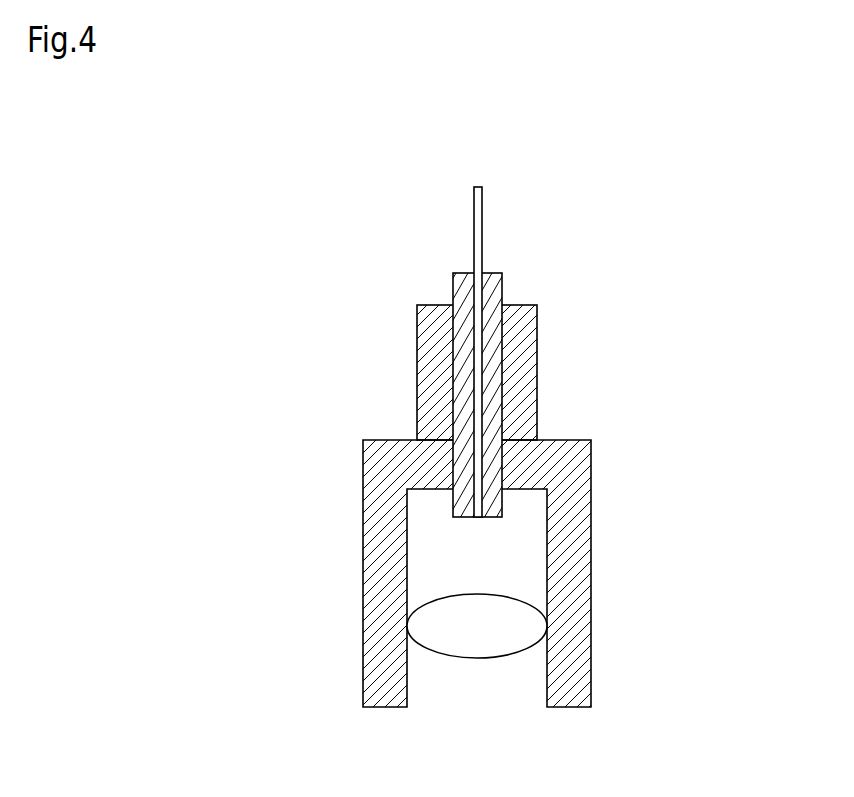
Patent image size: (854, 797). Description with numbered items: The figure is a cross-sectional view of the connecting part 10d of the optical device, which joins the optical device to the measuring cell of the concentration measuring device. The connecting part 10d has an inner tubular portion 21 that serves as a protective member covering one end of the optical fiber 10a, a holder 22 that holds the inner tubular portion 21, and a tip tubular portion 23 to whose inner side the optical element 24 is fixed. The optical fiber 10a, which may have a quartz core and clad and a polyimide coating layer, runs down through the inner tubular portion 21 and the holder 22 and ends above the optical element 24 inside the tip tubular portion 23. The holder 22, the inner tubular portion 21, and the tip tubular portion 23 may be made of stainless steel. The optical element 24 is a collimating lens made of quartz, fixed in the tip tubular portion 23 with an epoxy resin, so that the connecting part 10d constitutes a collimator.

The optical fiber 10a is at (481, 231).
The connecting part 10d is at (653, 248).
The inner tubular portion 21 is at (500, 274).
The holder 22 is at (430, 382).
The tip tubular portion 23 is at (572, 610).
The optical element 24 is at (477, 648).